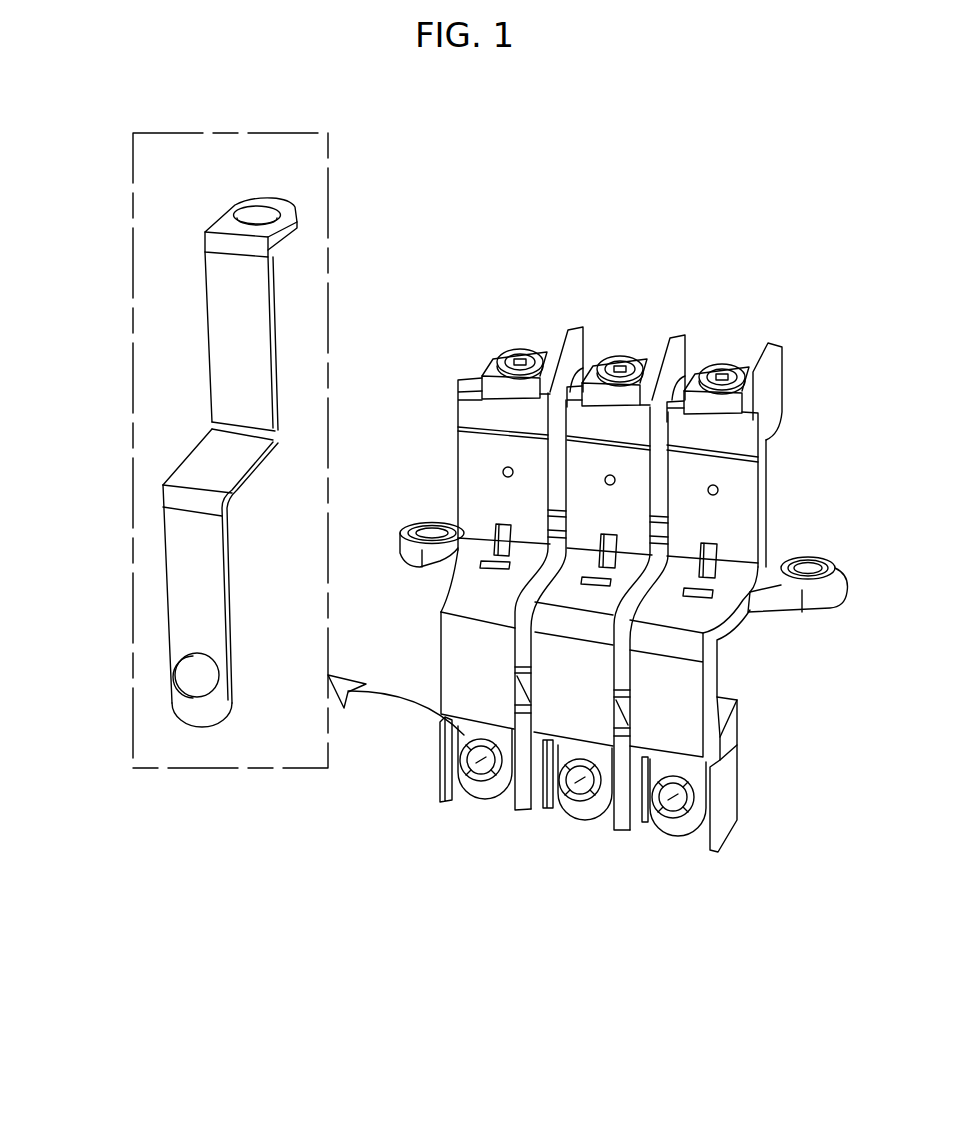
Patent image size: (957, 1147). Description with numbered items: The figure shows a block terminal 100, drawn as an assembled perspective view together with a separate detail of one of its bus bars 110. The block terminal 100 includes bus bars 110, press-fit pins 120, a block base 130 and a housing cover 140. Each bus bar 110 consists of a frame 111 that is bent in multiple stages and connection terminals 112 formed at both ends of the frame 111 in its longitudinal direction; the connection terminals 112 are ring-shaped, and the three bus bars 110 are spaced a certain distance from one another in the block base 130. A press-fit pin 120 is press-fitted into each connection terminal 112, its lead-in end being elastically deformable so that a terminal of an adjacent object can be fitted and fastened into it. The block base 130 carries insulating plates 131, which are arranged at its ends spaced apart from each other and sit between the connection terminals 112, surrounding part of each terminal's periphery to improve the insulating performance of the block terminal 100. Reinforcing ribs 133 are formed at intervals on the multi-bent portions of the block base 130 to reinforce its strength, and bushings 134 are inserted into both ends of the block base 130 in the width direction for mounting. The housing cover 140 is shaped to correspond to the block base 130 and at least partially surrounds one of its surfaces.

The block terminal 100 is at (669, 169).
The bus bar 110 is at (208, 176).
The frame 111 is at (212, 470).
The connection terminal 112 is at (228, 212).
The press-fit pin 120 is at (723, 350).
The block base 130 is at (452, 450).
The insulating plate 131 is at (617, 825).
The reinforcing rib 133 is at (720, 553).
The bushing 134 is at (826, 560).
The housing cover 140 is at (762, 778).